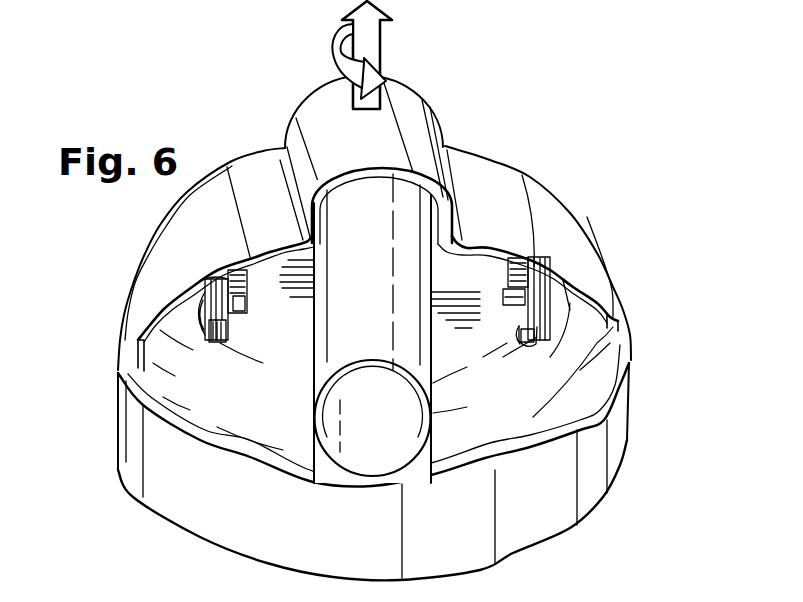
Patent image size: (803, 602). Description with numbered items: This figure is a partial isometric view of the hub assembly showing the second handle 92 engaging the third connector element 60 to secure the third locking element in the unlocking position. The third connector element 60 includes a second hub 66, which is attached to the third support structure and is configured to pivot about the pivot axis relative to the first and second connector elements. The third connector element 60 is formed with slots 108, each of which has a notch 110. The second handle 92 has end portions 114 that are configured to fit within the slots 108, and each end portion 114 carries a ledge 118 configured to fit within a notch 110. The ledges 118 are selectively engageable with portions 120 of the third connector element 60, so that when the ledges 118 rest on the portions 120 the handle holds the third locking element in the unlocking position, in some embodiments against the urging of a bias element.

The third connector element 60 is at (613, 470).
The second hub 66 is at (625, 413).
The second handle 92 is at (493, 163).
The slot 108 is at (203, 317).
The notch 110 is at (512, 298).
The end portion 114 is at (215, 297).
The ledge 118 is at (235, 287).
The portion of the third connector element 120 is at (238, 323).